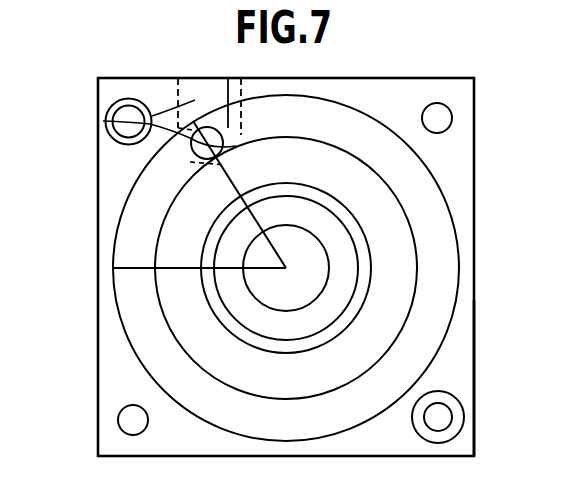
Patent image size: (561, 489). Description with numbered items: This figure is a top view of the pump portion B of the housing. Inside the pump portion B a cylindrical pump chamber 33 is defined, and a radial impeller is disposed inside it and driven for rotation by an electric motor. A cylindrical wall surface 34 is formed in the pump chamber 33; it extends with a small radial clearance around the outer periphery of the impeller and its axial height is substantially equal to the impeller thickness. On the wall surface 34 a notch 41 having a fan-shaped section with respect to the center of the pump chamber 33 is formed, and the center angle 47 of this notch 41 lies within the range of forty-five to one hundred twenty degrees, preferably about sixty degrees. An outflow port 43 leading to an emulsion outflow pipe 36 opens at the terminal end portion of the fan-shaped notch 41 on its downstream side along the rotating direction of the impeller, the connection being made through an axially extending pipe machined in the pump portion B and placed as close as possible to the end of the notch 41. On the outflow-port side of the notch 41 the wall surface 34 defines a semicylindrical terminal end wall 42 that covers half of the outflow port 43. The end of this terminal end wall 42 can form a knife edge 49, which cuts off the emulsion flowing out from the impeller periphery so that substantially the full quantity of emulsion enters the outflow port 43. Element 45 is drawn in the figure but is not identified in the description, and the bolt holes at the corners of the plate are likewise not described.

The pump chamber 33 is at (382, 317).
The pump portion B is at (457, 370).
The outer periphery 45 is at (117, 292).
The wall surface 34 is at (413, 247).
The notch 41 is at (133, 250).
The center angle 47 is at (230, 186).
The emulsion outflow pipe 36 is at (152, 116).
The terminal end wall 42 is at (242, 110).
The outflow port 43 is at (204, 160).
The knife edge 49 is at (227, 148).